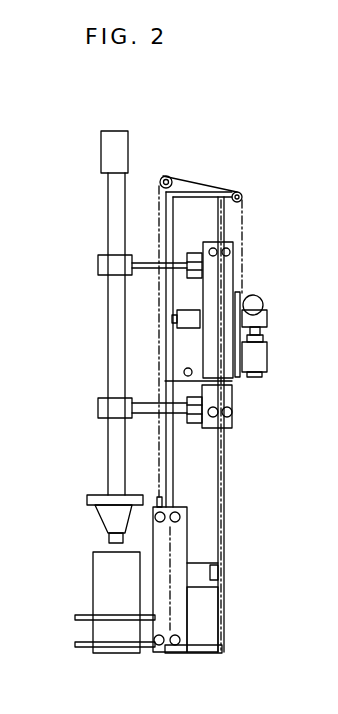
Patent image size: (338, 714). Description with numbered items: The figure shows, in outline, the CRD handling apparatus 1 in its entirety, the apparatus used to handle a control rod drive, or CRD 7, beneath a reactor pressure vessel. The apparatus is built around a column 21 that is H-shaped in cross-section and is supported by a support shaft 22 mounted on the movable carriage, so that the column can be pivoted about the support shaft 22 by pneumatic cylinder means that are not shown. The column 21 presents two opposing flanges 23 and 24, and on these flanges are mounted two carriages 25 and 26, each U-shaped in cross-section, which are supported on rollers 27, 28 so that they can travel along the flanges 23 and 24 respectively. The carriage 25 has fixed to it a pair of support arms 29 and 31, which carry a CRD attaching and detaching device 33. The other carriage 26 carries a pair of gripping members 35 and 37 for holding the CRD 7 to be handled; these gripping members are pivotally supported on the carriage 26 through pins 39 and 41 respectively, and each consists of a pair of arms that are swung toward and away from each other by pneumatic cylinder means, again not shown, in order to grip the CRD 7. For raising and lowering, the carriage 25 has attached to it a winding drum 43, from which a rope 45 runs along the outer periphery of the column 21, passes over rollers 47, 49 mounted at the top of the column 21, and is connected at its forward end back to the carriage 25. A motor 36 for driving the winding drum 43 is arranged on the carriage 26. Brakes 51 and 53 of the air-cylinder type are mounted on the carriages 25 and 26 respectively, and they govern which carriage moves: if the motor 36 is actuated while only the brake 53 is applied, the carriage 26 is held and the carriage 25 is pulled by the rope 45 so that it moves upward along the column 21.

The CRD handling apparatus 1 is at (248, 466).
The CRD 7 is at (107, 230).
The column 21 is at (208, 528).
The support shaft 22 is at (184, 371).
The flange 23 is at (167, 498).
The flange 24 is at (226, 450).
The carriage 25 is at (188, 598).
The carriage 26 is at (233, 276).
The roller 27 is at (178, 655).
The roller 28 is at (240, 256).
The support arm 29 is at (75, 617).
The support arm 31 is at (80, 648).
The CRD attaching and detaching device 33 is at (93, 570).
The gripping member 35 is at (100, 273).
The motor 36 is at (267, 352).
The gripping member 37 is at (98, 406).
The pin 39 is at (194, 250).
The pin 41 is at (193, 423).
The winding drum 43 is at (268, 308).
The rope 45 is at (240, 262).
The roller 47 is at (242, 194).
The roller 49 is at (160, 177).
The brake 51 is at (210, 560).
The brake 53 is at (177, 320).